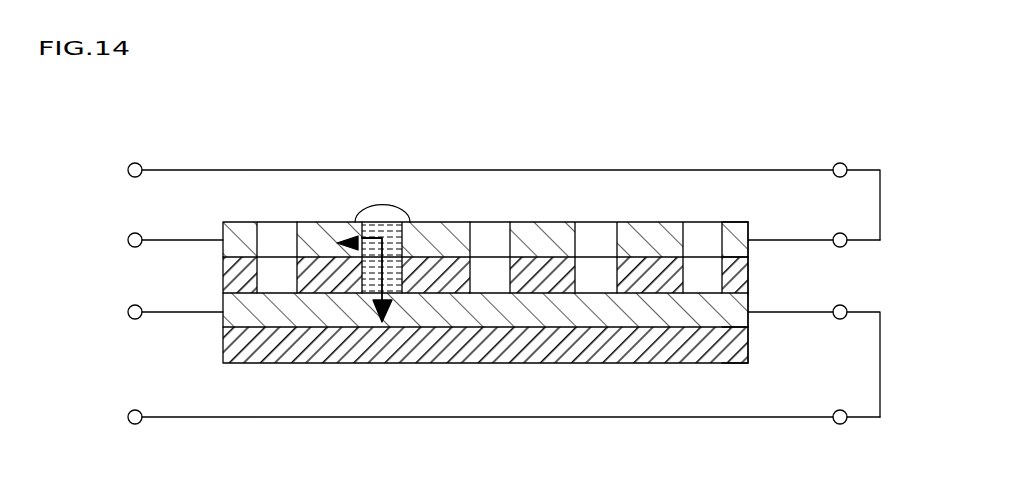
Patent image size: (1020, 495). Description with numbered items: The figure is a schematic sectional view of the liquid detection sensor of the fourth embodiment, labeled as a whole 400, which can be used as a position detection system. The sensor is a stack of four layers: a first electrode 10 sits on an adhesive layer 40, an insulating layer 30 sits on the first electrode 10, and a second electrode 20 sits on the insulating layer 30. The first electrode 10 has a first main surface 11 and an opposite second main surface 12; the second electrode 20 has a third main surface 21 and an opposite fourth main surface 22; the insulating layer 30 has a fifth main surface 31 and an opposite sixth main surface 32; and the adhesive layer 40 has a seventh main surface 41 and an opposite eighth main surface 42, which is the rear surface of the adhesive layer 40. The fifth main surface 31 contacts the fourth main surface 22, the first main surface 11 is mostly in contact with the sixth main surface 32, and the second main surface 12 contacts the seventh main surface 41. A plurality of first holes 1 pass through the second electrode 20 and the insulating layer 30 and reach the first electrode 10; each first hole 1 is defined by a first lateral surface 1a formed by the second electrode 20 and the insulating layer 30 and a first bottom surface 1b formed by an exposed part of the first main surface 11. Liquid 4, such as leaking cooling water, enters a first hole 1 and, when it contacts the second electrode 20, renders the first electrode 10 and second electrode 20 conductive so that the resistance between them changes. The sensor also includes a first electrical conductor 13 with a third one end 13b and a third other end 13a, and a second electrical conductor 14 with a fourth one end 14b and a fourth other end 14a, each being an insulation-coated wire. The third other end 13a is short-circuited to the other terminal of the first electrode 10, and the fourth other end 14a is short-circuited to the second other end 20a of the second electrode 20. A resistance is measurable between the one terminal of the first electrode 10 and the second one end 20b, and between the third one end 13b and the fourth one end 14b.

The laminated piezoelectric element / device 400 is at (821, 111).
The first hole 1 is at (430, 124).
The first lateral surface 1a is at (470, 240).
The first bottom surface 1b is at (492, 290).
The liquid 4 is at (360, 214).
The first electrode 10 is at (236, 303).
The first main surface 11 is at (752, 284).
The second main surface 12 is at (752, 345).
The first electrical conductor 13 is at (752, 419).
The third other end 13a is at (846, 422).
The third one end 13b is at (127, 417).
The second electrical conductor 14 is at (747, 168).
The fourth other end 14a is at (846, 165).
The fourth one end 14b is at (127, 170).
The second electrode 20 is at (233, 232).
The second other end 20a is at (846, 246).
The second one end 20b is at (127, 240).
The third main surface 21 is at (737, 222).
The fourth main surface 22 is at (748, 266).
The insulating layer 30 is at (233, 270).
The fifth main surface 31 is at (742, 257).
The sixth main surface 32 is at (744, 292).
The adhesive layer 40 is at (236, 345).
The seventh main surface 41 is at (738, 327).
The eighth main surface 42 is at (744, 364).